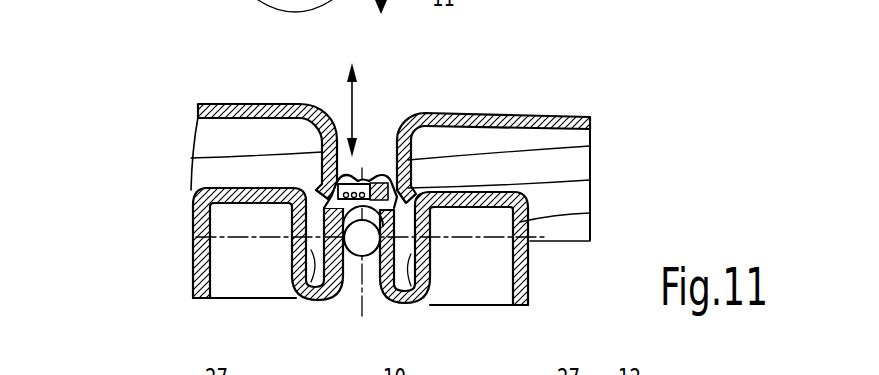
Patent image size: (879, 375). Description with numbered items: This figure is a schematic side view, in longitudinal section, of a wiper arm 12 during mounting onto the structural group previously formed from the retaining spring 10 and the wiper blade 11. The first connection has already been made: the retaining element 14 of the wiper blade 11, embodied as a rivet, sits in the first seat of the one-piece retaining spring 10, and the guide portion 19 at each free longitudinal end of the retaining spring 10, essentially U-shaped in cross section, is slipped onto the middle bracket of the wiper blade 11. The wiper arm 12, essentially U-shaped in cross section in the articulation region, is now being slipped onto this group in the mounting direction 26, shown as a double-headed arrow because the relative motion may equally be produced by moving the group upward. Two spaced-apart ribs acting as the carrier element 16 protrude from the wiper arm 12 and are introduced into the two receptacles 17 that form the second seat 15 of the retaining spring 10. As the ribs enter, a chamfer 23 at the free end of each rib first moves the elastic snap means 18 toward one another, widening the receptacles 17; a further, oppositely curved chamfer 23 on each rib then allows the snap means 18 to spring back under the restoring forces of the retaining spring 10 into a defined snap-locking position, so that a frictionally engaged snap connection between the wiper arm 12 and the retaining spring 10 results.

The retaining spring 10 is at (550, 277).
The wiper blade 11 is at (367, 212).
The wiper arm 12 is at (531, 98).
The retaining element 14 is at (361, 260).
The second seat 15 is at (288, 290).
The carrier element 16 is at (198, 157).
The receptacles 17 is at (318, 293).
The elastic snap means 18 is at (374, 140).
The guide portion 19 is at (373, 281).
The chamfer 23 is at (245, 105).
The mounting direction 26 is at (346, 104).